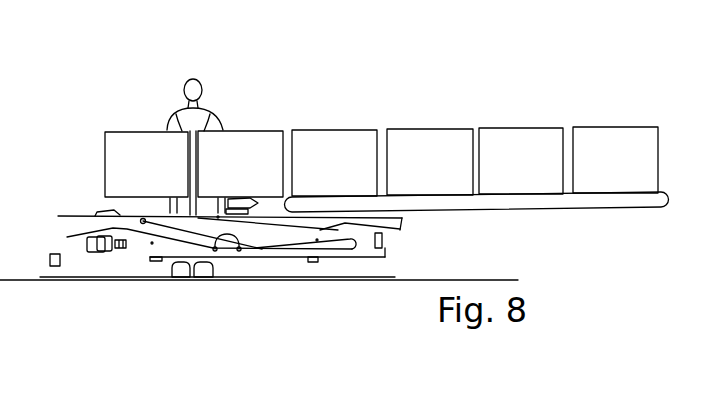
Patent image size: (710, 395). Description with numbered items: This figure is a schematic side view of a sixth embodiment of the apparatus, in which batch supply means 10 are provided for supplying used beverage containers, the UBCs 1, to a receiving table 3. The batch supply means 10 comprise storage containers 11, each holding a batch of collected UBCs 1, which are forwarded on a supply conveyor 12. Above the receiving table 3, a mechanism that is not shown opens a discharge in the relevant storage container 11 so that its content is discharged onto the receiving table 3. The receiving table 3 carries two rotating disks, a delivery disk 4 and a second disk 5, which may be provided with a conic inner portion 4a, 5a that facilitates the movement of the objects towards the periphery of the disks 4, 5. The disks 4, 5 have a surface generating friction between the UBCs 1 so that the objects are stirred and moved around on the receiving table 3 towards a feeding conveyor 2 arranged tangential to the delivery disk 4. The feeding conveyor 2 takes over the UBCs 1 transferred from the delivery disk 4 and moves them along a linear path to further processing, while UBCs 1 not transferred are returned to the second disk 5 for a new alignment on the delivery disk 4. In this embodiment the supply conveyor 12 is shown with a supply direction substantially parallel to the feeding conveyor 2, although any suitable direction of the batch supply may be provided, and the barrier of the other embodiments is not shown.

The UBCs 1 is at (116, 214).
The feeding conveyor 2 is at (290, 228).
The receiving table 3 is at (223, 283).
The delivery disk 4 is at (372, 232).
The conic inner portion 4a is at (357, 228).
The second disk 5 is at (135, 237).
The conic inner portion 5a is at (112, 231).
The batch supply means 10 is at (630, 87).
The storage containers 11 is at (439, 150).
The supply conveyor 12 is at (608, 199).